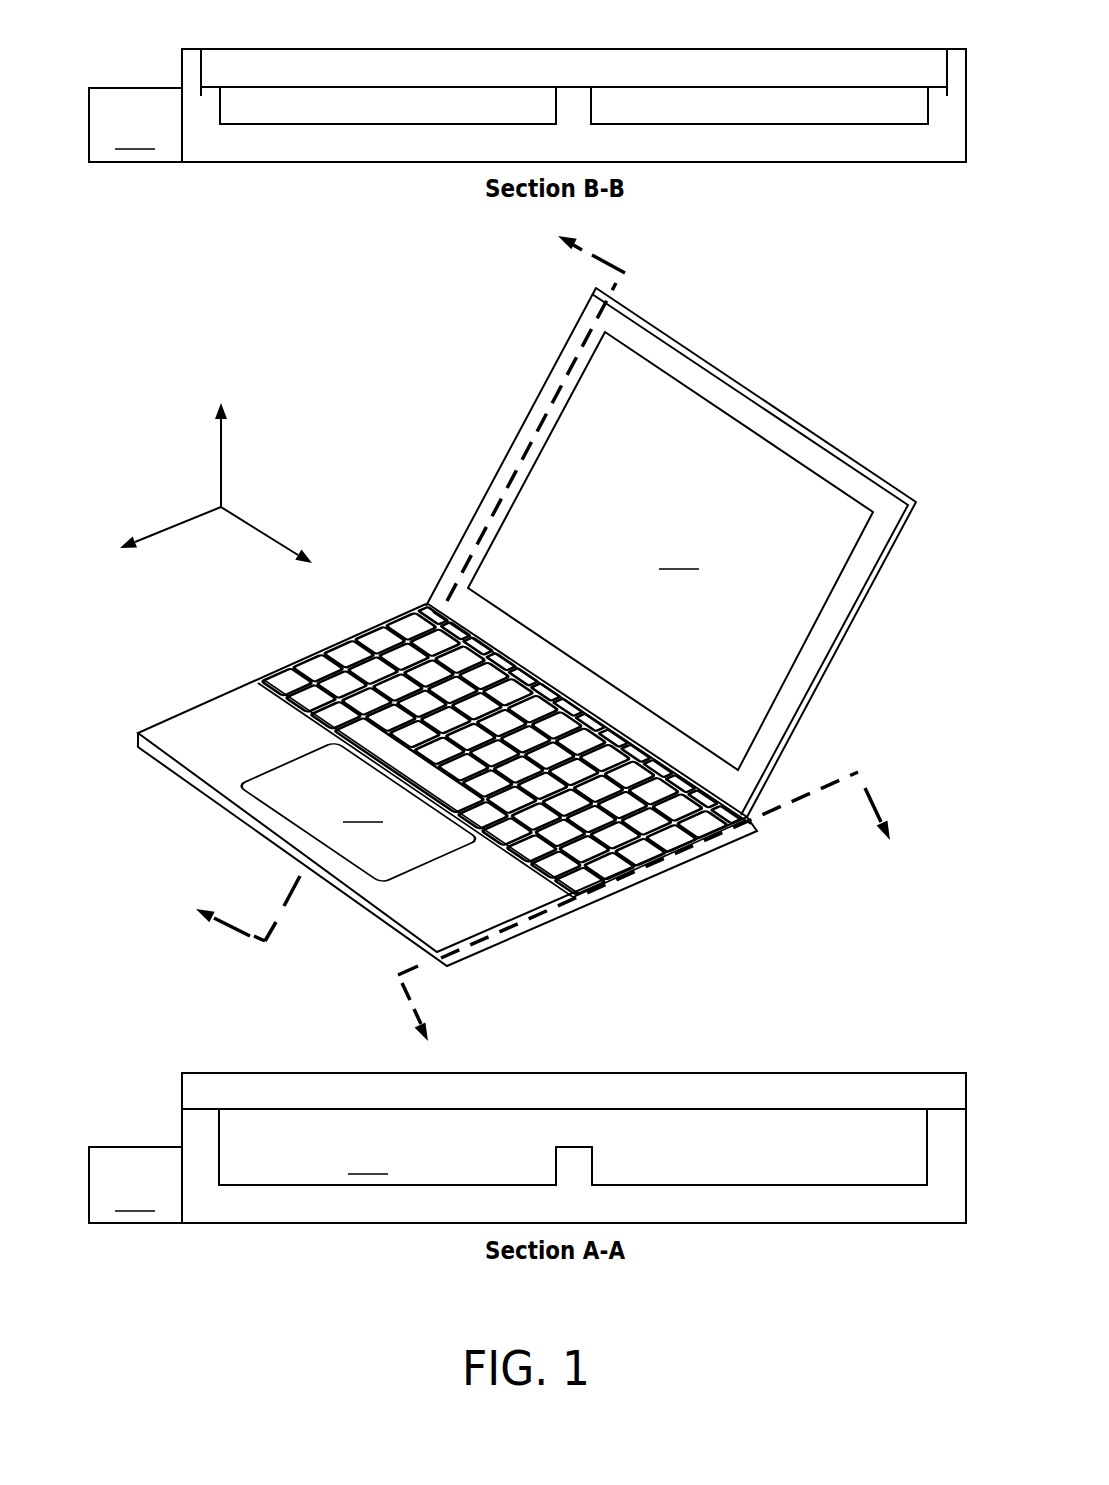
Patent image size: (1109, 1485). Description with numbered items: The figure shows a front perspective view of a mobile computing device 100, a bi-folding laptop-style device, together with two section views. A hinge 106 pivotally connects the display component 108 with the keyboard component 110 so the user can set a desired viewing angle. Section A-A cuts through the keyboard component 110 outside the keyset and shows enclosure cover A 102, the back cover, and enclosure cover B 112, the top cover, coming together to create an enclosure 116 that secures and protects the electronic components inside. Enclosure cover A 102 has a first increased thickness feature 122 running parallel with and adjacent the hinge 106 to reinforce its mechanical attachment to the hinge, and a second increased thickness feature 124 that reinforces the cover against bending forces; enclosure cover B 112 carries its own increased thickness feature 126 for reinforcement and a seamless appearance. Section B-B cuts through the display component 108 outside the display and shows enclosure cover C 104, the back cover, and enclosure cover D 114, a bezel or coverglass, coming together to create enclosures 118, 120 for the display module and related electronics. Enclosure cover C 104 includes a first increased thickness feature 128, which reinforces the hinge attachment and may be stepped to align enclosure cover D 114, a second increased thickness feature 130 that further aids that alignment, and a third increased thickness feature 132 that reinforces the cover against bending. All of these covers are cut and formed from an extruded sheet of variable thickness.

The mobile computing device 100 is at (424, 400).
The enclosure cover A 102 is at (574, 1206).
The enclosure cover C 104 is at (574, 145).
The hinge 106 is at (588, 711).
The display component 108 is at (670, 551).
The keyboard component 110 is at (359, 813).
The enclosure cover B 112 is at (574, 1092).
The enclosure cover D 114 is at (574, 68).
The enclosure 116 is at (573, 1147).
The enclosure 118 is at (388, 105).
The enclosure 120 is at (759, 105).
The first increased thickness feature 122 is at (200, 1168).
The second increased thickness feature 124 is at (577, 1167).
The increased thickness feature 126 is at (948, 1167).
The first increased thickness feature 128 is at (200, 107).
The second increased thickness feature 130 is at (947, 106).
The third increased thickness feature 132 is at (573, 106).